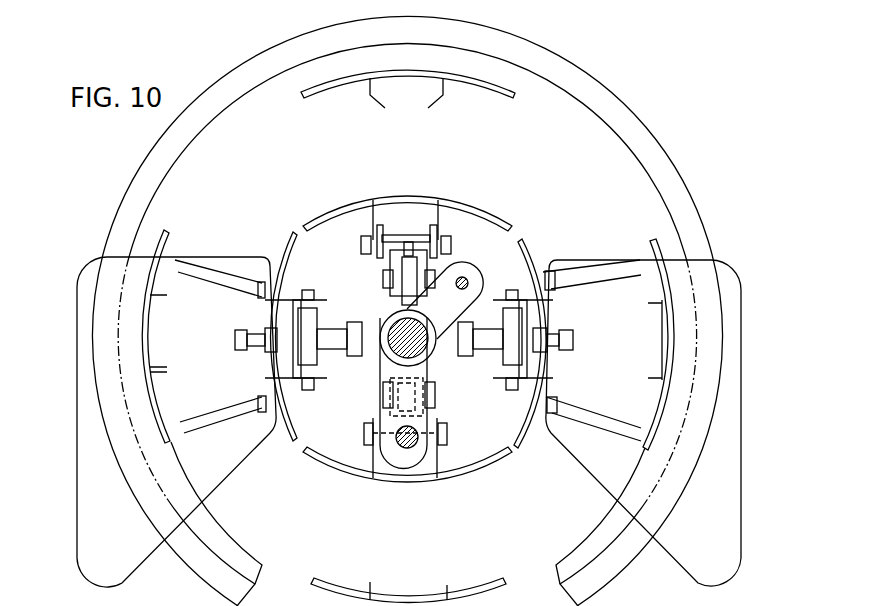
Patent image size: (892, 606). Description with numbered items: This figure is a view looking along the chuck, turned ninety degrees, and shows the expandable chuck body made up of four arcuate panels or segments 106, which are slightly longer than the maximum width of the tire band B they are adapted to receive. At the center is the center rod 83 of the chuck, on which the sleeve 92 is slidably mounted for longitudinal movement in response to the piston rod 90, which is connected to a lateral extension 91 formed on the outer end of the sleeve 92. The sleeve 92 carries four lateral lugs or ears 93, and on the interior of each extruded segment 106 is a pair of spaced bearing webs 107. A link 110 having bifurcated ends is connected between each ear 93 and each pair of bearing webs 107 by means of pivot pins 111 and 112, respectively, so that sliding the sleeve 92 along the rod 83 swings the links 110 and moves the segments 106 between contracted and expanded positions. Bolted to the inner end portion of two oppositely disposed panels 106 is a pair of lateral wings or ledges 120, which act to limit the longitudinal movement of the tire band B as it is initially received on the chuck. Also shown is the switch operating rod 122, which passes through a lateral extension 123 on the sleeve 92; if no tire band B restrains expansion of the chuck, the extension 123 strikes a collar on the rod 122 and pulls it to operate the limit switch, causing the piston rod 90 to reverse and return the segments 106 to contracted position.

The tire band B is at (616, 106).
The center rod 83 is at (394, 358).
The piston rod 90 is at (406, 450).
The lateral extension 91 is at (380, 393).
The sleeve 92 is at (382, 376).
The lateral lugs or ears 93 is at (378, 322).
The arcuate panels or segments 106 is at (470, 78).
The bearing webs 107 is at (657, 373).
The link 110 is at (333, 312).
The pivot pin 111 is at (431, 279).
The pivot pin 112 is at (452, 245).
The lateral wings or ledges 120 is at (93, 466).
The switch operating rod 122 is at (469, 277).
The lateral extension 123 is at (470, 265).